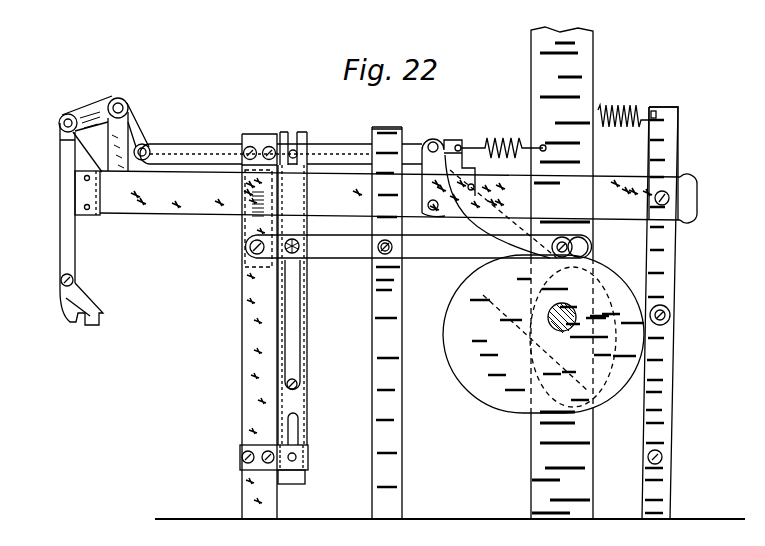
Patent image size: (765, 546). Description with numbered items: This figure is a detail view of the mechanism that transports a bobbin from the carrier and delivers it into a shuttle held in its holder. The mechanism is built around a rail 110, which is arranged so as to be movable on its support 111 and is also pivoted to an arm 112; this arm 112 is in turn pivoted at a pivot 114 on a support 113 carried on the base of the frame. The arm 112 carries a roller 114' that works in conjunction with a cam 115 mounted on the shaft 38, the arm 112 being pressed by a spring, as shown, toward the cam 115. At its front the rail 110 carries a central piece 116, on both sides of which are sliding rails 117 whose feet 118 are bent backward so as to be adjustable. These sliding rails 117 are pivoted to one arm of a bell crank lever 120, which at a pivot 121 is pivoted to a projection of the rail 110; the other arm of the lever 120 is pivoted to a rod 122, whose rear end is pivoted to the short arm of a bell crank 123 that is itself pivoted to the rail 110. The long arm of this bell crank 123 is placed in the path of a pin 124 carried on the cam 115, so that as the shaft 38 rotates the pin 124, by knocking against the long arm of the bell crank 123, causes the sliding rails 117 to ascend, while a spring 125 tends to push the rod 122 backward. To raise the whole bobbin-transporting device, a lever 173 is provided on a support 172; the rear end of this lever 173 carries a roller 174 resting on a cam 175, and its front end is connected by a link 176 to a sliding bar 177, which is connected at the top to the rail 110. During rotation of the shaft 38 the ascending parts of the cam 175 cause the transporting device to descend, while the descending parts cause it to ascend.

The shaft 38 is at (549, 321).
The rail 110 is at (163, 214).
The support 111 is at (240, 272).
The arm 112 is at (678, 146).
The support 113 is at (668, 487).
The pivot 114 is at (675, 458).
The roller 114' is at (680, 315).
The cam 115 is at (612, 392).
The central piece 116 is at (91, 215).
The sliding rails 117 is at (74, 250).
The feet 118 is at (90, 323).
The bell crank lever 120 is at (147, 141).
The pivot 121 is at (128, 102).
The rod 122 is at (216, 148).
The bell crank 123 is at (448, 220).
The pin 124 is at (580, 385).
The spring 125 is at (507, 138).
The support 172 is at (372, 345).
The lever 173 is at (424, 260).
The roller 174 is at (588, 240).
The cam 175 is at (505, 304).
The link 176 is at (305, 296).
The sliding bar 177 is at (304, 332).